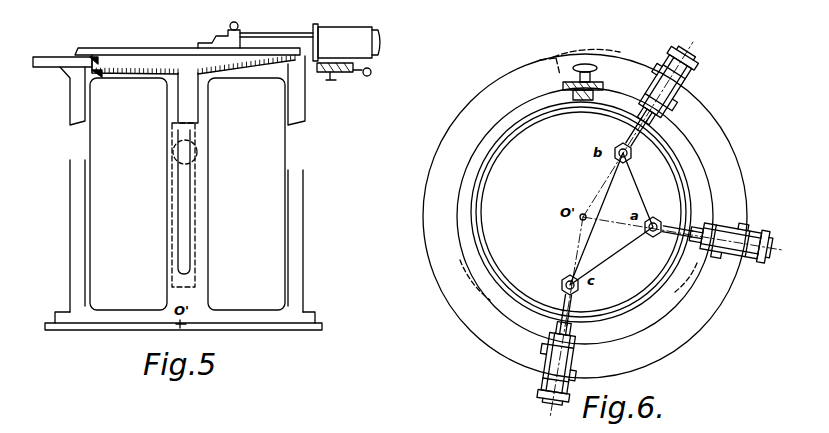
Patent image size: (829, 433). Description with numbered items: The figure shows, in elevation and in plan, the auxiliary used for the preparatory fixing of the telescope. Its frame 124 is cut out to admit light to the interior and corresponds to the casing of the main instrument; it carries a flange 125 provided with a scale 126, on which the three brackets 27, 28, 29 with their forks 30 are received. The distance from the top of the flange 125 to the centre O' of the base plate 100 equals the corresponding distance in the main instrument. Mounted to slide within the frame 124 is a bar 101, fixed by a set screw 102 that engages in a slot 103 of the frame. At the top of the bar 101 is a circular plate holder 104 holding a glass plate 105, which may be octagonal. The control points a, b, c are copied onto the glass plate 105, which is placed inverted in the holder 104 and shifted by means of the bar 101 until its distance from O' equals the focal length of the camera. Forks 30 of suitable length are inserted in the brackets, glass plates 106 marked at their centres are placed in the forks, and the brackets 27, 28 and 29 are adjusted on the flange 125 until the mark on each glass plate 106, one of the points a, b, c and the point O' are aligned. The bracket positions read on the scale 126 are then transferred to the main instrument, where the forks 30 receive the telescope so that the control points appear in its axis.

In FIG. 5, the base plate 100 is at (318, 327).
In FIG. 5, the bar 101 is at (188, 108).
In FIG. 6, the bar 101 is at (567, 97).
In FIG. 6, the set screw 102 is at (580, 65).
In FIG. 5, the slot 103 is at (185, 198).
In FIG. 5, the circular plate holder 104 is at (113, 55).
In FIG. 6, the circular plate holder 104 is at (470, 240).
In FIG. 5, the glass plate 105 is at (175, 53).
In FIG. 6, the glass plate 105 is at (490, 208).
In FIG. 6, the glass plates 106 is at (568, 278).
In FIG. 5, the frame 124 is at (295, 245).
In FIG. 6, the frame 124 is at (600, 85).
In FIG. 5, the flange 125 is at (77, 62).
In FIG. 6, the flange 125 is at (480, 327).
In FIG. 5, the scale 126 is at (135, 73).
In FIG. 6, the bracket 27 is at (672, 85).
In FIG. 5, the bracket 28 is at (360, 50).
In FIG. 6, the bracket 28 is at (740, 240).
In FIG. 6, the bracket 29 is at (557, 378).
In FIG. 6, the forks 30 is at (547, 342).